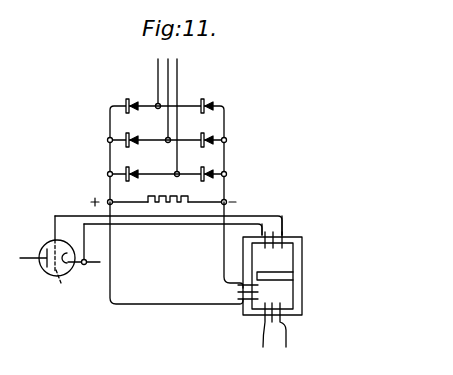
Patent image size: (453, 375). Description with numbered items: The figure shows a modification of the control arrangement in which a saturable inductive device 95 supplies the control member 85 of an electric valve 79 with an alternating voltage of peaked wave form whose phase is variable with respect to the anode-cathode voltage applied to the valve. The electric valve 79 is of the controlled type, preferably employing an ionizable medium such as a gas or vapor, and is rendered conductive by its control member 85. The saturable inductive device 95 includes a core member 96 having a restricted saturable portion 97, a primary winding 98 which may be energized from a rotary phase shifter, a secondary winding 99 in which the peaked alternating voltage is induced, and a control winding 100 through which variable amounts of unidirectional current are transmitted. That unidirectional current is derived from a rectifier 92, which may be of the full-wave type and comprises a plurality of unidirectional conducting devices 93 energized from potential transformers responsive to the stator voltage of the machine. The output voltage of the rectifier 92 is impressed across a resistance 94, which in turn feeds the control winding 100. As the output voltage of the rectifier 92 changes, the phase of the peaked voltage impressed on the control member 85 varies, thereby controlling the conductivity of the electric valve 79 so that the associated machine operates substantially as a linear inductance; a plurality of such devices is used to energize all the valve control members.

The electric valve means 79 is at (46, 246).
The control member 85 is at (65, 285).
The rectifier 92 is at (102, 160).
The unidirectional conducting devices 93 is at (139, 158).
The resistance 94 is at (164, 197).
The saturable inductive device 95 is at (271, 281).
The core member 96 is at (302, 290).
The restricted saturable portion 97 is at (258, 246).
The primary winding 98 is at (284, 326).
The secondary winding 99 is at (275, 233).
The control winding 100 is at (243, 292).